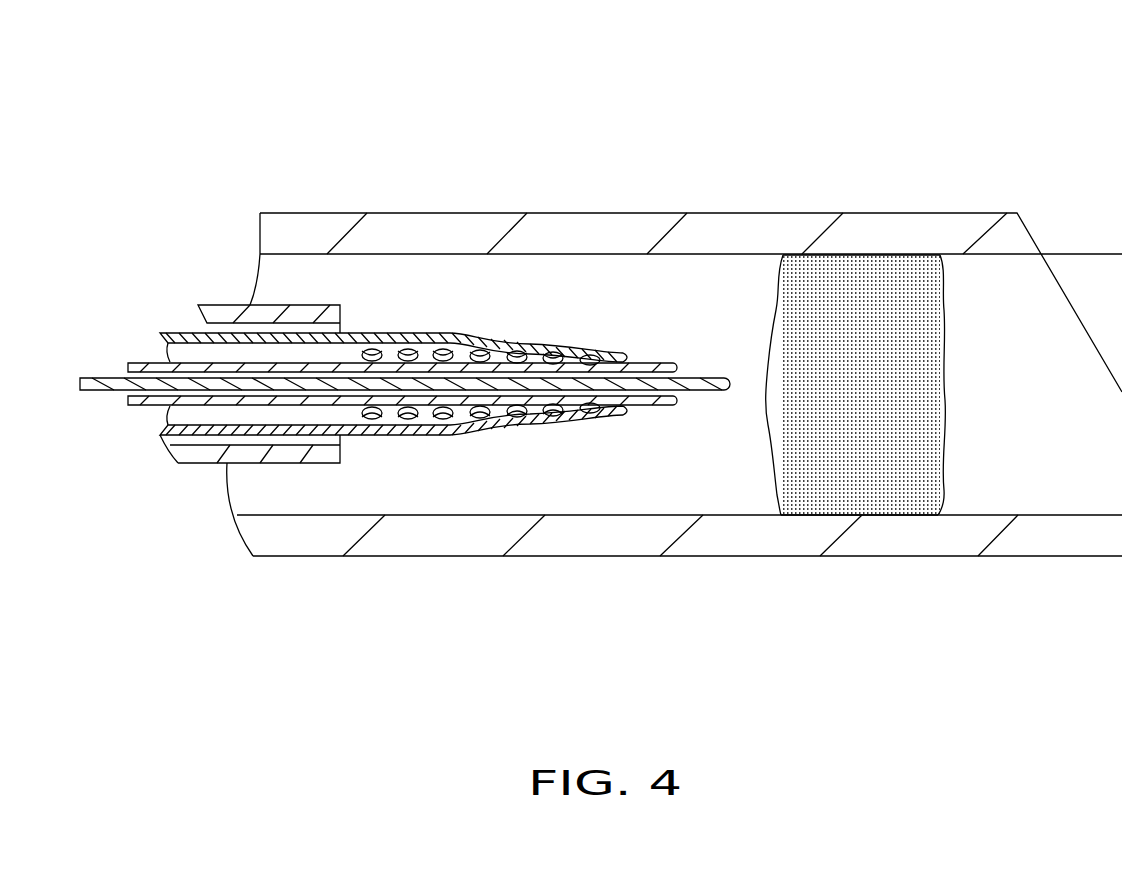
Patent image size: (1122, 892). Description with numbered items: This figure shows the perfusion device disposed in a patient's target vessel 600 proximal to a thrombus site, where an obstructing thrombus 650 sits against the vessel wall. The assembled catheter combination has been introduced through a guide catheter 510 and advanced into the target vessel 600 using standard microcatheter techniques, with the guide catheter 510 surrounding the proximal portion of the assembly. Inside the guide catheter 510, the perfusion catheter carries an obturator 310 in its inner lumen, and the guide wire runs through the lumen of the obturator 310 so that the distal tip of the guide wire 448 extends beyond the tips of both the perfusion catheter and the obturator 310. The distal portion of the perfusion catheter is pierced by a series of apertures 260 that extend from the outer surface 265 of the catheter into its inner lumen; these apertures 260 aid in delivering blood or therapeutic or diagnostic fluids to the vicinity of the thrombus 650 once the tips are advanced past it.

The target vessel 600 is at (450, 212).
The obstructing thrombus 650 is at (885, 255).
The distal tip of the guide wire 448 is at (708, 378).
The obturator 310 is at (652, 405).
The outer surface of the perfusion catheter 265 is at (592, 343).
The apertures 260 is at (422, 433).
The guide catheter 510 is at (298, 305).